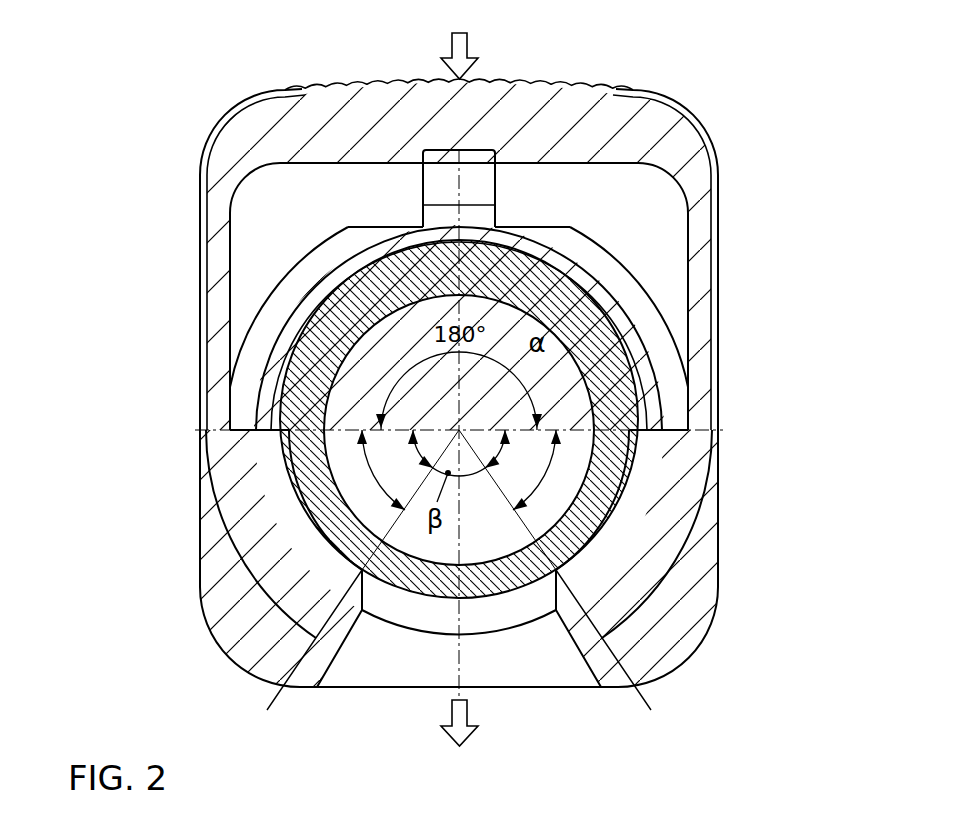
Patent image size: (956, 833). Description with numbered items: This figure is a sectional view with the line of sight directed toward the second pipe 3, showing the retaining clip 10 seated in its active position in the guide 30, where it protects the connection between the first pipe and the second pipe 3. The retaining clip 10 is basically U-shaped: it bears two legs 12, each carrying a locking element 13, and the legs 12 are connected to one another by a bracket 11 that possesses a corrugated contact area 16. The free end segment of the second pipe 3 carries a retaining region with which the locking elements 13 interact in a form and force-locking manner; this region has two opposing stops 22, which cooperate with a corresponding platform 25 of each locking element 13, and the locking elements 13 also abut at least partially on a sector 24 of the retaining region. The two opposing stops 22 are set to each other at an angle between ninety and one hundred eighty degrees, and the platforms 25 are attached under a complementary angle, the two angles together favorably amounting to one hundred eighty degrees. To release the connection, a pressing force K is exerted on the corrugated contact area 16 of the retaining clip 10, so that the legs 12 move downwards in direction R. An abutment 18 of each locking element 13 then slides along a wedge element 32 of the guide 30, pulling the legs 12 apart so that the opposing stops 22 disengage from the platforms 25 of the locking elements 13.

The second pipe 3 is at (562, 290).
The retaining clip 10 is at (683, 107).
The bracket 11 is at (560, 108).
The legs 12 is at (218, 255).
The locking element 13 is at (262, 530).
The corrugated contact area 16 is at (370, 76).
The abutment 18 is at (330, 631).
The opposing stops 22 is at (276, 416).
The sector 24 is at (367, 463).
The platforms 25 is at (262, 445).
The guide 30 is at (238, 590).
The wedge element 32 is at (412, 670).
The pressing force K is at (462, 48).
The direction R is at (470, 714).